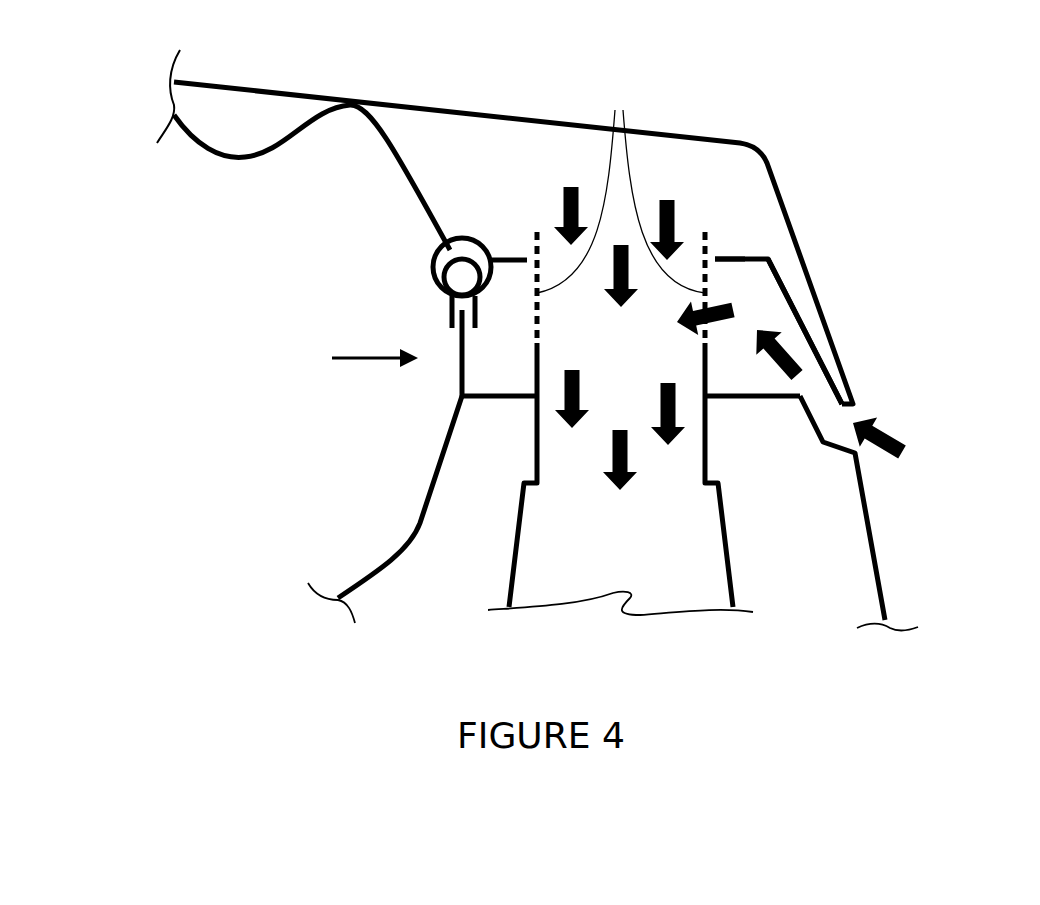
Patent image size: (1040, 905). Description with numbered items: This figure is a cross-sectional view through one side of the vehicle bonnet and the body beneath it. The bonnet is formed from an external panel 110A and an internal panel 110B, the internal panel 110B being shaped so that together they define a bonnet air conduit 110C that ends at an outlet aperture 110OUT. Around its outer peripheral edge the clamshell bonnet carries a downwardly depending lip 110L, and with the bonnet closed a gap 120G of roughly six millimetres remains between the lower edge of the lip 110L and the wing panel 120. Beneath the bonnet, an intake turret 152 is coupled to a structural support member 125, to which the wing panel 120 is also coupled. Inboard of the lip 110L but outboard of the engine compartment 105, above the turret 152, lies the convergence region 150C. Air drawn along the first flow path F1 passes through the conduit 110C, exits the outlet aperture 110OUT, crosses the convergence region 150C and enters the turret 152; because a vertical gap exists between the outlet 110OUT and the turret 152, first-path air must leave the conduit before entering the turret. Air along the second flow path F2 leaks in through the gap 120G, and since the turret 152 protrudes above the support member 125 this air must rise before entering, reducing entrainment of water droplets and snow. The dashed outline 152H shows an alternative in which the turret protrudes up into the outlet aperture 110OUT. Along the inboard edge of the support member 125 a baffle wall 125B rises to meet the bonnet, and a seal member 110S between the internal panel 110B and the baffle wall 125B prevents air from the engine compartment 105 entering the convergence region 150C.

The engine compartment 105 is at (318, 387).
The external panel 110A is at (797, 238).
The internal panel 110B is at (228, 155).
The air conduit 110C is at (517, 179).
The lip 110L is at (815, 335).
The bonnet air conduit outlet aperture 110OUT is at (713, 255).
The seal member 110S is at (435, 262).
The wing panel 120 is at (882, 573).
The gap 120G is at (857, 413).
The support member 125 is at (796, 390).
The baffle wall 125B is at (462, 370).
The convergence region 150C is at (620, 407).
The intake turret 152 is at (707, 437).
The dashed outline of intake turret 152H is at (621, 214).
The first flow path F1 is at (905, 450).
The second flow path F2 is at (672, 208).